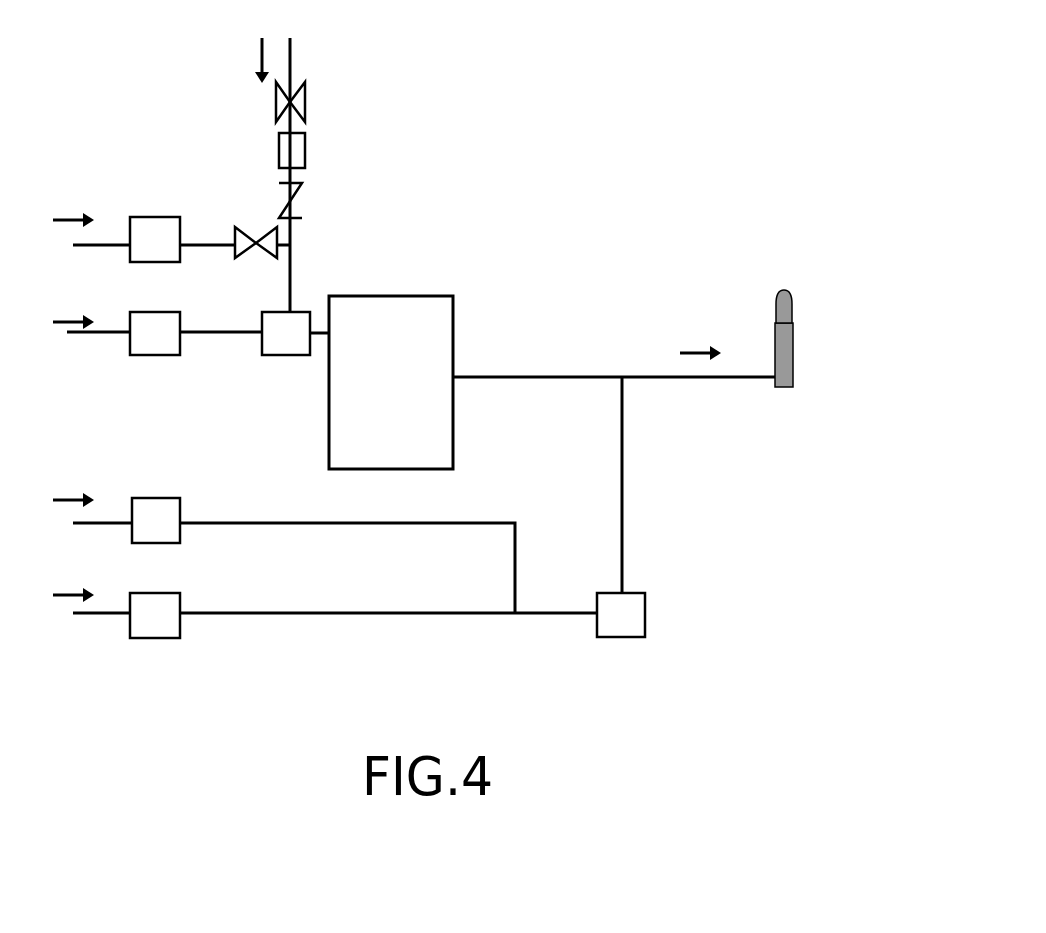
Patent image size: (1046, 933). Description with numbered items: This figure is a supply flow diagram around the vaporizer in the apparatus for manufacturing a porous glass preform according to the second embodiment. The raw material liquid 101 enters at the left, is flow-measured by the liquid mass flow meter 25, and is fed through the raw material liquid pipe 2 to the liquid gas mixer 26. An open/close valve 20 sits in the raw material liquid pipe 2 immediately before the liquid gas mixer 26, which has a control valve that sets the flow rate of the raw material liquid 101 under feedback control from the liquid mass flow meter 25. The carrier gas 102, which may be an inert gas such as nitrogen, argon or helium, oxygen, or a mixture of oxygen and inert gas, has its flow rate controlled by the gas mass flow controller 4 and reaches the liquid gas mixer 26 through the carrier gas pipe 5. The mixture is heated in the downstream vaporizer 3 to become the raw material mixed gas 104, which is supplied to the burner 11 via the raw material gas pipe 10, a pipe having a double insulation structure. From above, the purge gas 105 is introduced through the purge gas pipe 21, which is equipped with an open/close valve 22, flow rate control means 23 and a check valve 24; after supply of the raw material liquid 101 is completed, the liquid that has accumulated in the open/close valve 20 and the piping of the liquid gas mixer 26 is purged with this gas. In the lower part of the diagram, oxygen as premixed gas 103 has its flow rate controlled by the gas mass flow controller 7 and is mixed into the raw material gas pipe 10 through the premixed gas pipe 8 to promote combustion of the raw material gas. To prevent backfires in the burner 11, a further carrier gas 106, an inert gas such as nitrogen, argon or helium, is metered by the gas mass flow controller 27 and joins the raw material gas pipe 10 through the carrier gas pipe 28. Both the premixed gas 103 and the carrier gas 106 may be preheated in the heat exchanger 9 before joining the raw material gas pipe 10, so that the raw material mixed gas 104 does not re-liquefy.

The raw material liquid pipe 2 is at (213, 240).
The vaporizer 3 is at (427, 292).
The gas mass flow controller 4 is at (157, 355).
The carrier gas pipe 5 is at (223, 335).
The gas mass flow controller 7 is at (145, 638).
The premixed gas pipe 8 is at (353, 613).
The heat exchanger 9 is at (622, 637).
The raw material gas pipe 10 is at (670, 378).
The burner 11 is at (793, 380).
The open/close valve 20 is at (248, 253).
The purge gas pipe 21 is at (292, 57).
The open/close valve 22 is at (297, 100).
The flow rate control means 23 is at (305, 146).
The check valve 24 is at (303, 197).
The liquid mass flow meter 25 is at (160, 217).
The liquid gas mixer 26 is at (262, 355).
The gas mass flow controller 27 is at (182, 498).
The carrier gas pipe 28 is at (353, 525).
The raw material liquid 101 is at (69, 201).
The carrier gas 102 is at (69, 304).
The premixed gas 103 is at (69, 577).
The raw material mixed gas 104 is at (701, 330).
The purge gas 105 is at (237, 56).
The carrier gas 106 is at (69, 478).